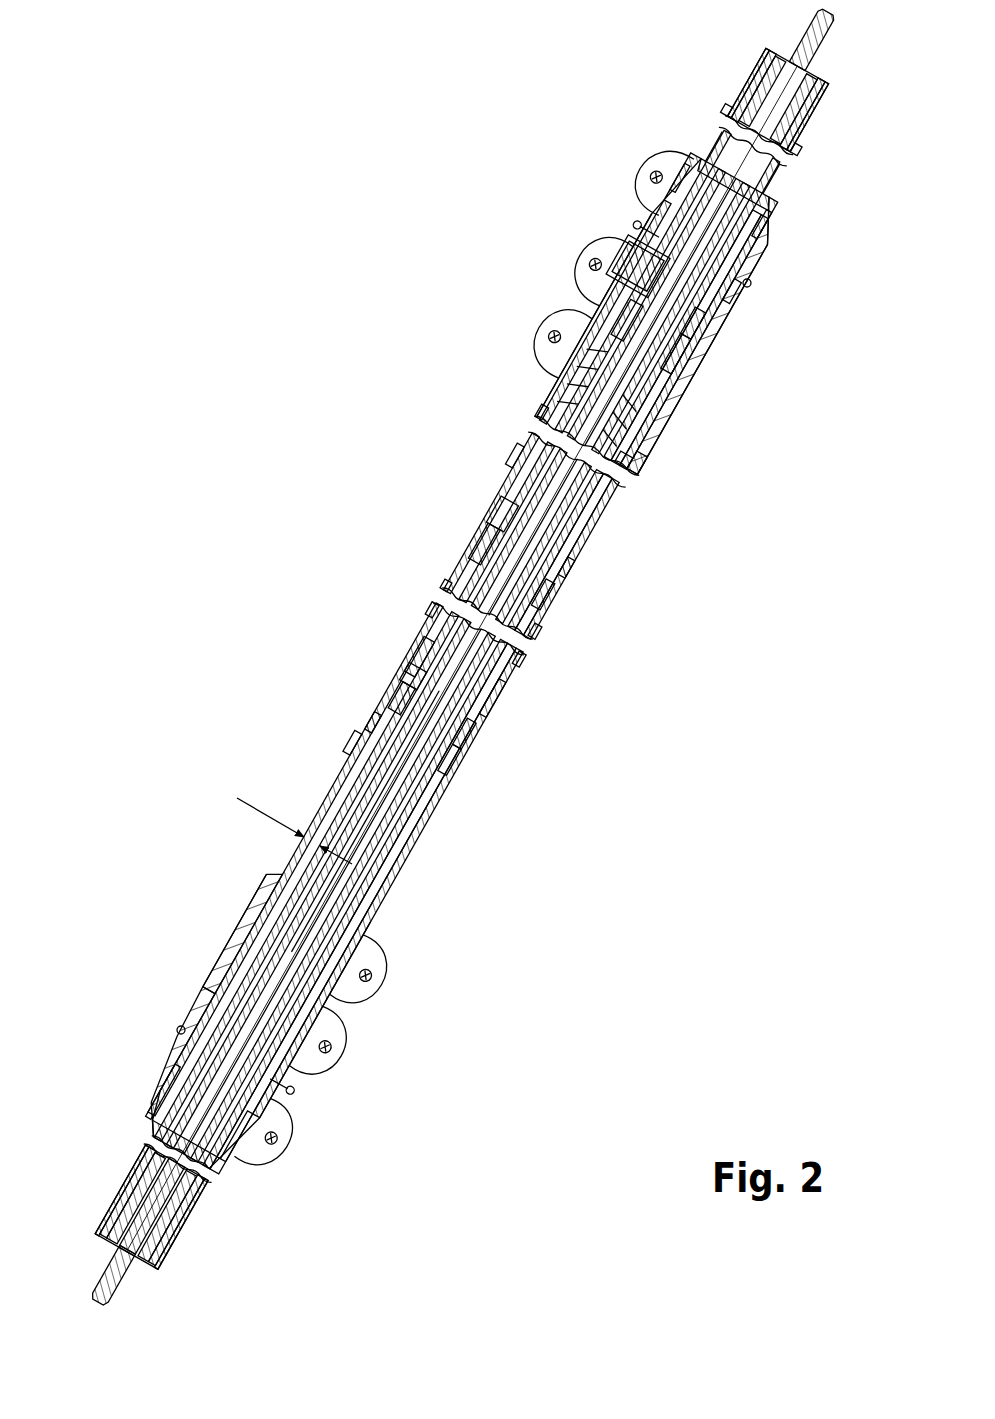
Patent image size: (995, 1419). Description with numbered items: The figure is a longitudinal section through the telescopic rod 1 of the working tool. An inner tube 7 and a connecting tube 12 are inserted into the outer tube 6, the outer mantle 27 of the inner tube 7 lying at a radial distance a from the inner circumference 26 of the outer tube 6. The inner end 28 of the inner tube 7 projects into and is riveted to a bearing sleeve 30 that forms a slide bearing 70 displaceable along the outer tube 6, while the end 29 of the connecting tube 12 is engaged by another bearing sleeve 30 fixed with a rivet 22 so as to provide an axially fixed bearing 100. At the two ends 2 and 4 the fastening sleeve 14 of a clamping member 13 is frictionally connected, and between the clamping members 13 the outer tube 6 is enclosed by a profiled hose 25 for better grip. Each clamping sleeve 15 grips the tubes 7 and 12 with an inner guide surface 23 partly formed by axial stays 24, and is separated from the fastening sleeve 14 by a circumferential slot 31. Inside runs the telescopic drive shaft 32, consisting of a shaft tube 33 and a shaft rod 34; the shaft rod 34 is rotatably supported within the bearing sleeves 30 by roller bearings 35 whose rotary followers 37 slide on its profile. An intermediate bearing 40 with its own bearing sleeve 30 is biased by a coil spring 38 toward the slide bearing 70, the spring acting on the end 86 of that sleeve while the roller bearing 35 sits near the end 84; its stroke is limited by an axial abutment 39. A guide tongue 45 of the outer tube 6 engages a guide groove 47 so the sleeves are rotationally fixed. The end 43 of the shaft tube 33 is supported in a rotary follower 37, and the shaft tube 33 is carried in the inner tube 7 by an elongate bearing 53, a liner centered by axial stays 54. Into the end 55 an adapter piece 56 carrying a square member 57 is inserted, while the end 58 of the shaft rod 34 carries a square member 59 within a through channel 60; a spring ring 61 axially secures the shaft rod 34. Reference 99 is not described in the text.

The telescopic rod 1 is at (300, 540).
The end of connecting tube 2 is at (524, 319).
The end of connecting tube 4 is at (186, 967).
The outer tube 6 is at (360, 740).
The inner tube 7 is at (397, 880).
The connecting tube 12 is at (746, 90).
The clamping member 13 is at (626, 226).
The fastening sleeve 14 is at (664, 420).
The clamping sleeve 15 is at (770, 200).
The rivet 22 is at (630, 292).
The inner guide surface 23 is at (740, 256).
The axial stays 24 is at (756, 238).
The profiled hose 25 is at (418, 854).
The inner circumference of outer tube 26 is at (318, 808).
The outer mantle 27 is at (728, 136).
The inner end of inner tube 28 is at (378, 690).
The end of connecting tube 29 is at (688, 360).
The bearing sleeve 30 is at (696, 322).
The circumferential slot 31 is at (622, 210).
The telescopic drive shaft 32 is at (437, 860).
The shaft tube 33 is at (364, 912).
The shaft rod 34 is at (800, 150).
The roller bearing 35 is at (405, 645).
The rotary follower 37 is at (400, 667).
The coil spring 38 is at (641, 461).
The axial abutment 39 is at (478, 545).
The intermediate bearing 40 is at (494, 518).
The end of shaft tube 43 is at (470, 740).
The axial guide tongue 45 is at (421, 804).
The guide groove 47 is at (455, 762).
The elongate bearing 53 is at (127, 1181).
The axial stays 54 is at (107, 1213).
The end of shaft tube 55 is at (150, 1183).
The adapter piece 56 is at (130, 1262).
The square member 57 is at (102, 1282).
The end of shaft rod 58 is at (786, 58).
The square member 59 is at (822, 30).
The through channel 60 is at (632, 488).
The spring ring 61 is at (628, 318).
The slide bearing 70 is at (500, 704).
The end of bearing sleeve 84 is at (557, 386).
The end of bearing sleeve 86 is at (736, 292).
The screw 99 is at (751, 284).
The axially fixed bearing 100 is at (617, 258).
The radial distance a is at (262, 823).